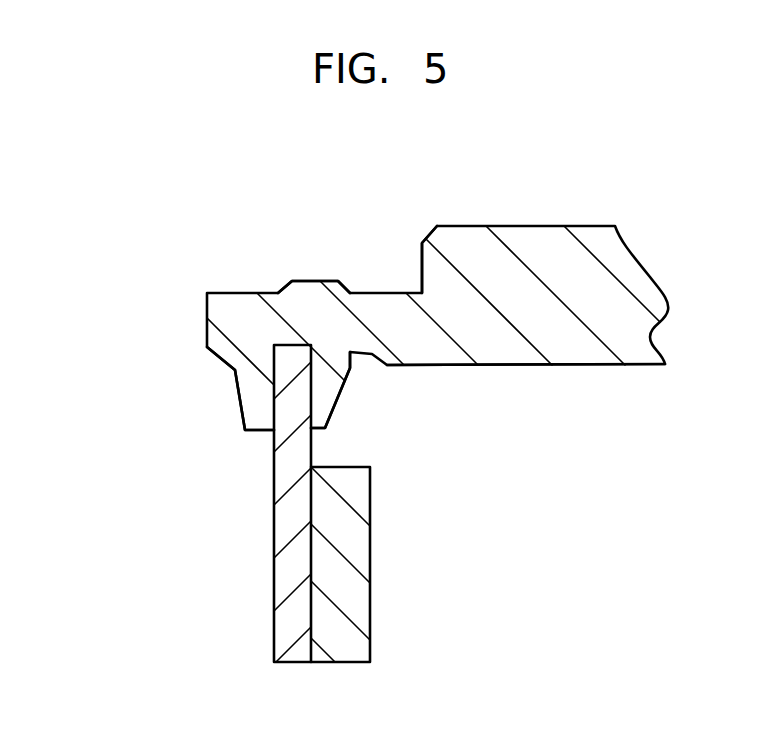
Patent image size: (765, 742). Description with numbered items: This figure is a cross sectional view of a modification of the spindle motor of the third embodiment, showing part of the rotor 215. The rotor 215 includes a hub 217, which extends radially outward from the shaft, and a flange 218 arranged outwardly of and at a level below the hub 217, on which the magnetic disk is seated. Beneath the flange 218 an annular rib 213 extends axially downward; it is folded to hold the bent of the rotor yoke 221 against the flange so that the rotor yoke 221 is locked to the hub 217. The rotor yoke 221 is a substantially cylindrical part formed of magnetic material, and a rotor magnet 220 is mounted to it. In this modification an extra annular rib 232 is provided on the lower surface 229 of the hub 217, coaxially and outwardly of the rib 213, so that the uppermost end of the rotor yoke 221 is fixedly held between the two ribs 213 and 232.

The annular rib 213 is at (323, 404).
The rotor 215 is at (565, 212).
The hub 217 is at (477, 226).
The flange 218 is at (330, 272).
The rotor magnet 220 is at (368, 623).
The rotor yoke 221 is at (297, 563).
The lower surface 229 is at (527, 366).
The extra annular rib 232 is at (253, 412).